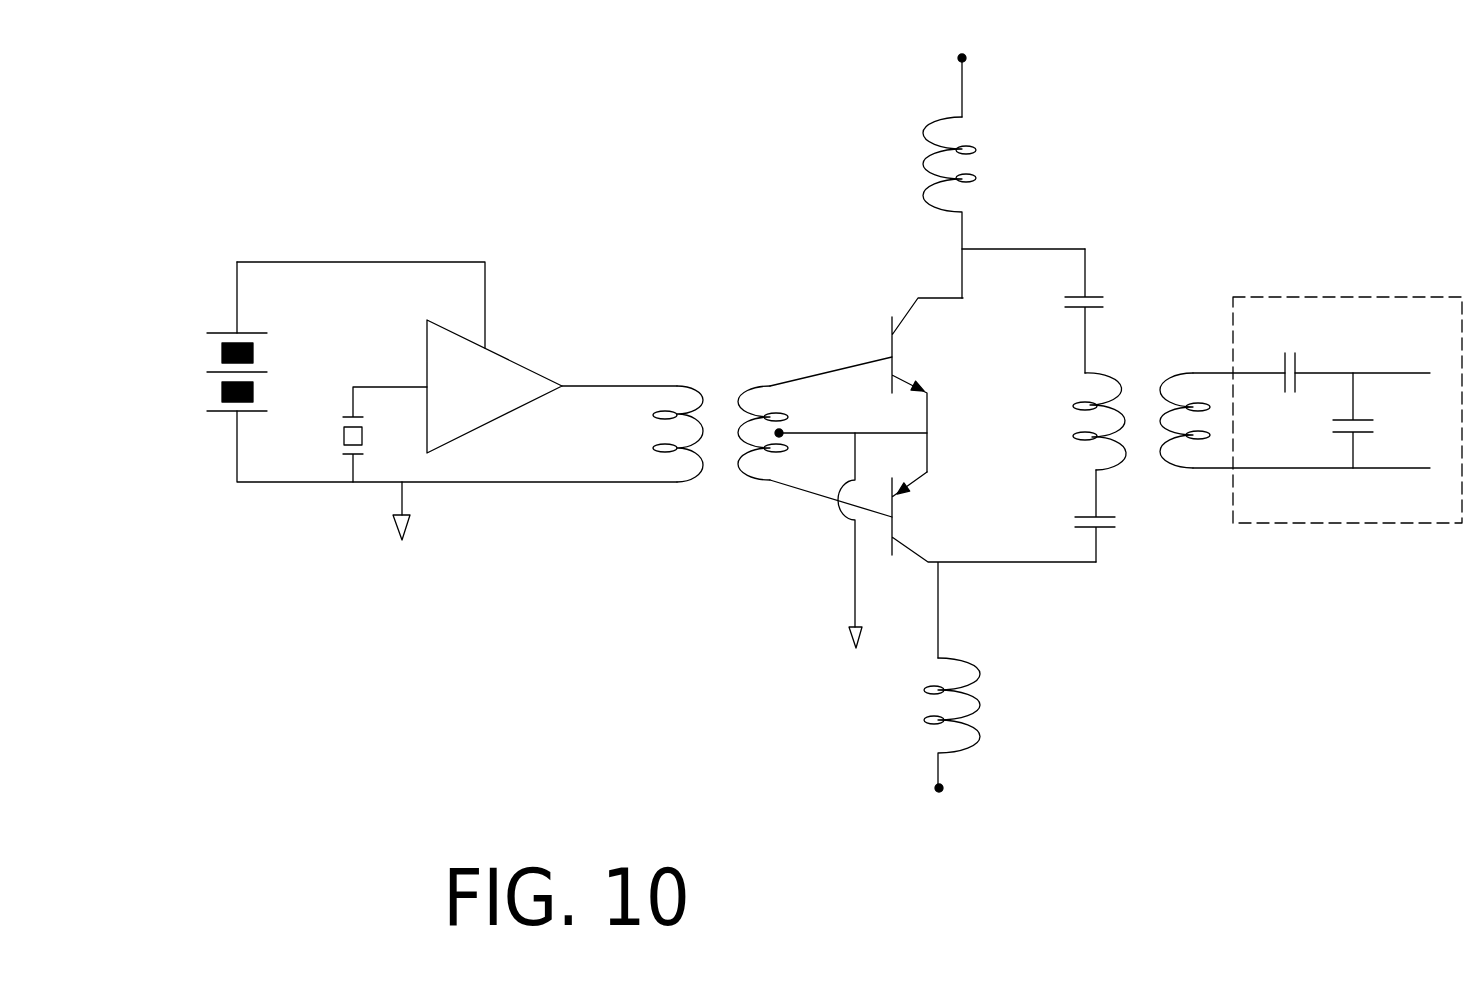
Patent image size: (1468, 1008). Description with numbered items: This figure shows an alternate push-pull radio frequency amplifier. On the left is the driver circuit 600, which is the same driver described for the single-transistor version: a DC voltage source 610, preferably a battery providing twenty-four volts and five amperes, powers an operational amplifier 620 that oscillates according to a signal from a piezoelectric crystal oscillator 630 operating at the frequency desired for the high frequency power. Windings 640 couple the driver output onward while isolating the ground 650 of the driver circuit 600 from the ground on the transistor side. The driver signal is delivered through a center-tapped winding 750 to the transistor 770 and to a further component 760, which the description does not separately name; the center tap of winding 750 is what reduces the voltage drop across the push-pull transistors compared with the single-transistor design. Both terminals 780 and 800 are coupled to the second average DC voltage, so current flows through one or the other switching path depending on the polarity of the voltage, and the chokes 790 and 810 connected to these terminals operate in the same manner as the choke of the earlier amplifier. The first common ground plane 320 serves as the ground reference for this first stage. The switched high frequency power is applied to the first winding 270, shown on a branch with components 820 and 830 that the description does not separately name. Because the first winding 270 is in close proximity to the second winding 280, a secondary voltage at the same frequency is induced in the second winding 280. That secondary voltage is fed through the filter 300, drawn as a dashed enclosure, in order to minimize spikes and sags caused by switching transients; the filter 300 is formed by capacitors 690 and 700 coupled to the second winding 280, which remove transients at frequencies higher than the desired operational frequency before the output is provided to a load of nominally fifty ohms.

The driver circuit 600 is at (457, 352).
The DC voltage source 610 is at (206, 372).
The operational amplifier 620 is at (354, 434).
The piezoelectric crystal oscillator 630 is at (494, 386).
The windings 640 is at (632, 434).
The ground 650 is at (402, 534).
The winding 750 is at (828, 429).
The transistor 770 is at (927, 385).
The PNP transistor 760 is at (994, 565).
The terminal 780 is at (992, 85).
The choke 790 is at (978, 207).
The capacitor 820 is at (1055, 311).
The first winding 270 is at (1072, 421).
The capacitor 830 is at (1066, 516).
The choke 810 is at (983, 723).
The terminal 800 is at (974, 793).
The first common ground plane 320 is at (853, 563).
The filter 300 is at (1406, 284).
The capacitor 690 is at (1290, 351).
The capacitor 700 is at (1382, 420).
The second winding 280 is at (1295, 438).